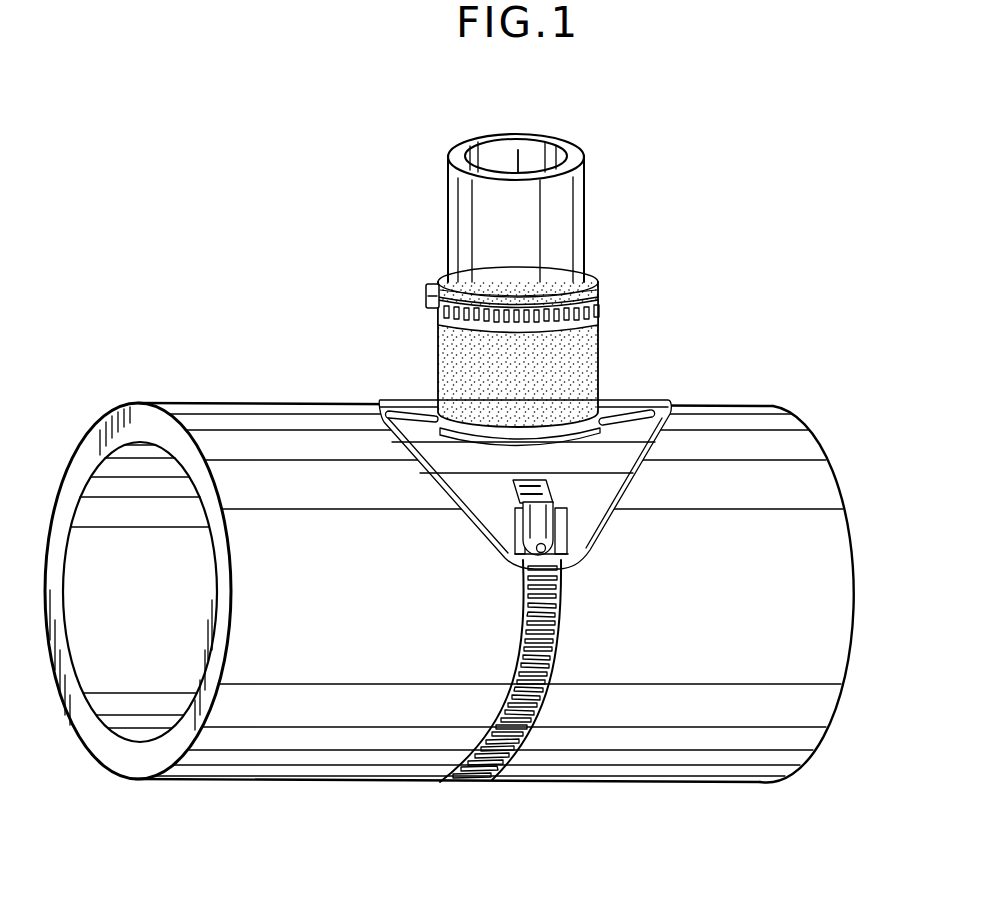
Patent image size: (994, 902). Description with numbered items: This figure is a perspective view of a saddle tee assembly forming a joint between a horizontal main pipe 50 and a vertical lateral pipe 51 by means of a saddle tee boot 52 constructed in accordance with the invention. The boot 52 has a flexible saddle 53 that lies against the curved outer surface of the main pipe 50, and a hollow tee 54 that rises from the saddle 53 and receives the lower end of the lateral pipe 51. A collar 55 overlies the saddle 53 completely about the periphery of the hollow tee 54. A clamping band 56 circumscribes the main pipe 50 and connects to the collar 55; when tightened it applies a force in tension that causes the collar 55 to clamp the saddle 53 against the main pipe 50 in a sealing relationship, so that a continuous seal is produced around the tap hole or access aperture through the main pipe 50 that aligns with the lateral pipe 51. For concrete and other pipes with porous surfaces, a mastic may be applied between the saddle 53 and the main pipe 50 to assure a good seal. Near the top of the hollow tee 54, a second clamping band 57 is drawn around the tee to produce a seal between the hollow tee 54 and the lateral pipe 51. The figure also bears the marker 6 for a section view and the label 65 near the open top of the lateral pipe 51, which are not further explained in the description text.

The main pipe 50 is at (250, 420).
The lateral pipe 51 is at (586, 174).
The saddle tee boot 52 is at (604, 321).
The flexible saddle 53 is at (446, 491).
The hollow tee 54 is at (437, 346).
The collar 55 is at (650, 410).
The clamping band 56 is at (558, 628).
The clamping band 57 is at (430, 292).
The tube bore 65 is at (521, 148).
The section line 6- 6 is at (516, 160).